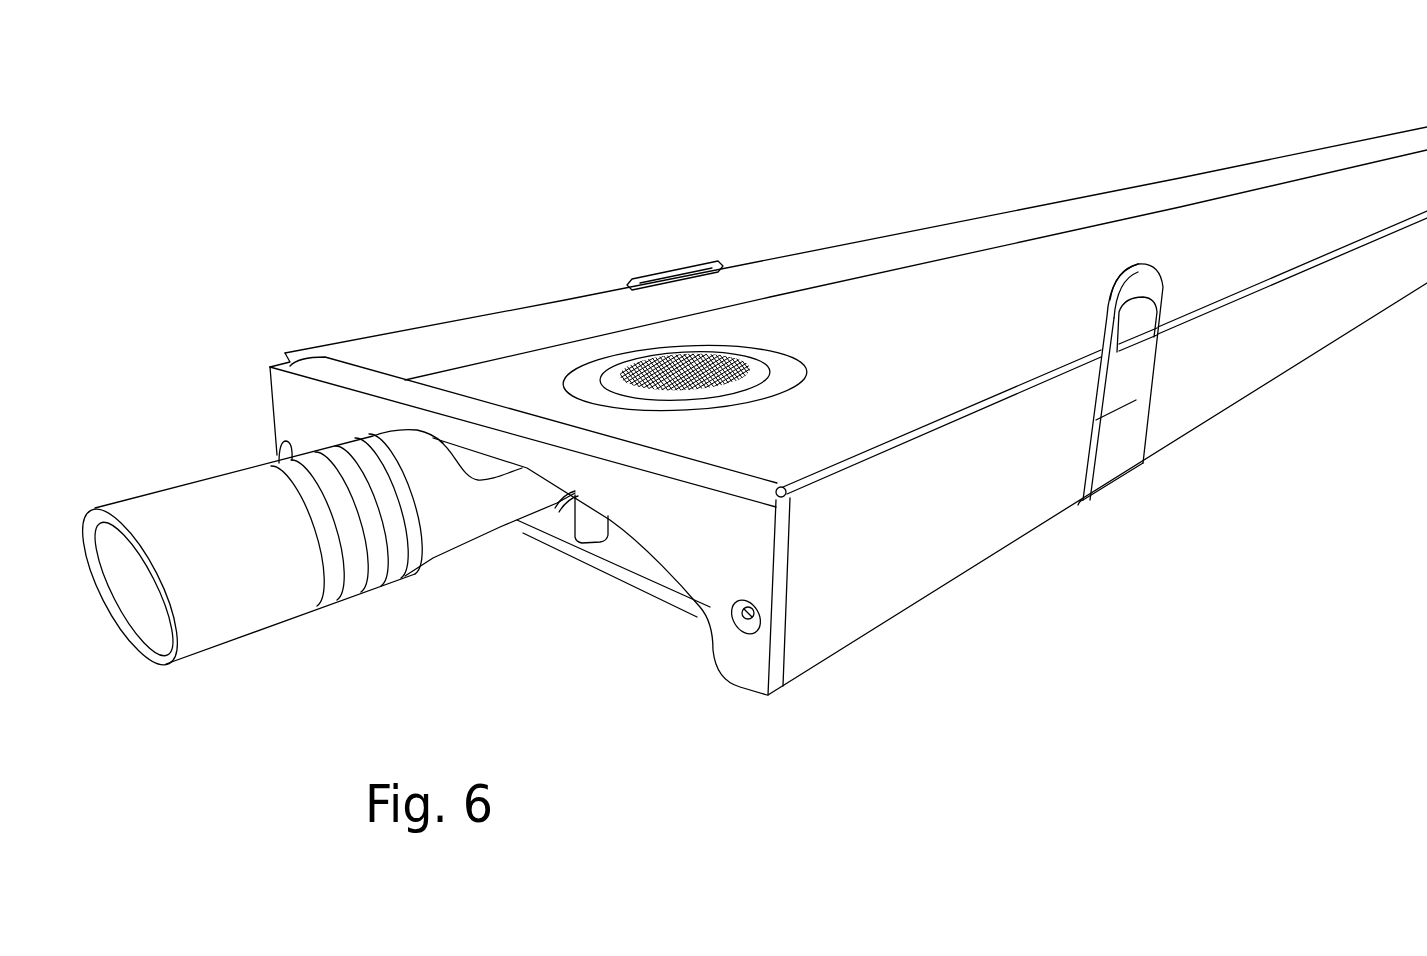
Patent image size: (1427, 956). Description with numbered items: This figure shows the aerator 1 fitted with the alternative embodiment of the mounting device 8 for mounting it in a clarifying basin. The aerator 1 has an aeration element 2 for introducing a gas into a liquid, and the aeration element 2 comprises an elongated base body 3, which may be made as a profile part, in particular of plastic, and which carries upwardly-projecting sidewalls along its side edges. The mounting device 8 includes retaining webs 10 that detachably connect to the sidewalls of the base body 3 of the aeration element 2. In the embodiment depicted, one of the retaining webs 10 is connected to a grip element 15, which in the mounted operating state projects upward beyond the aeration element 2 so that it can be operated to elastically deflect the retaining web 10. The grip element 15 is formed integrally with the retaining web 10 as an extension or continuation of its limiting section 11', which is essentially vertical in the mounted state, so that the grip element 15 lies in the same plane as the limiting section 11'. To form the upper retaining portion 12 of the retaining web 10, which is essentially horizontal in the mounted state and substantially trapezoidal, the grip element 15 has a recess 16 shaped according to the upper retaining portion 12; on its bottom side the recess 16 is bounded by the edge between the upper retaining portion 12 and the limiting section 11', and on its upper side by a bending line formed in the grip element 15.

The aerator 1 is at (440, 262).
The aeration element 2 is at (975, 515).
The base body 3 is at (898, 560).
The mounting device 8 is at (1117, 443).
The retaining web 10 is at (1107, 467).
The limiting section 11' is at (1185, 382).
The upper retaining portion 12 is at (1135, 345).
The grip element 15 is at (1146, 282).
The recess 16 is at (1137, 318).